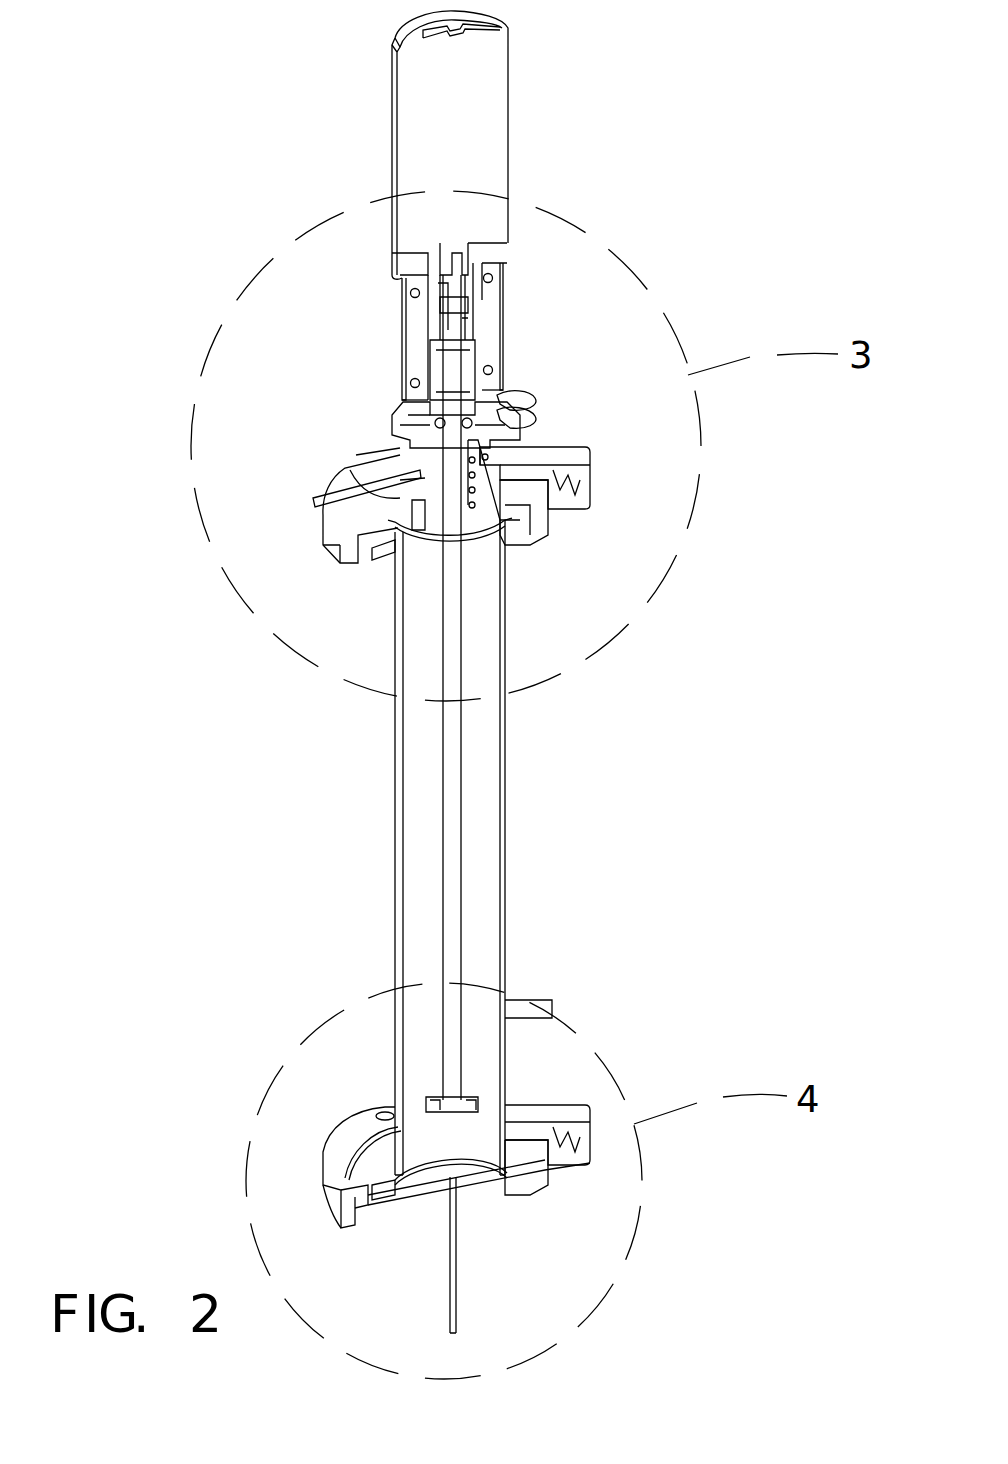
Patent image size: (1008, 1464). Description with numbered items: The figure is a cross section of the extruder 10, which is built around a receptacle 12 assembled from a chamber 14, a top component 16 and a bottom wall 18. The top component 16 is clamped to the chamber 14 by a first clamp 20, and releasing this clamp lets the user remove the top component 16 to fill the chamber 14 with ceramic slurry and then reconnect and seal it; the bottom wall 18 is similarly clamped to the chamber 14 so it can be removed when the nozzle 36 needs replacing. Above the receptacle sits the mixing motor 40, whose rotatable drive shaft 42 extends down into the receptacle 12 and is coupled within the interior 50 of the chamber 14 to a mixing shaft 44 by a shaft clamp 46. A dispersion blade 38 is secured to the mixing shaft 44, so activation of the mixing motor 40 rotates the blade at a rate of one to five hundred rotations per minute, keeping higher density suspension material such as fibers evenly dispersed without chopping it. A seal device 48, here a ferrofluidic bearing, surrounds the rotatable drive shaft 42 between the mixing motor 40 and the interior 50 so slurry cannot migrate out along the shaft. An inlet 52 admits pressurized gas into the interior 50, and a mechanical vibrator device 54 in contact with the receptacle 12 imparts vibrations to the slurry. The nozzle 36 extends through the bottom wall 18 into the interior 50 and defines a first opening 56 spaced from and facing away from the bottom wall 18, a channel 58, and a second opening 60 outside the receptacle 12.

The extruder 10 is at (642, 304).
The receptacle 12 is at (474, 740).
The chamber 14 is at (508, 817).
The top component 16 is at (498, 482).
The bottom wall 18 is at (480, 1172).
The first clamp 20 is at (327, 543).
The nozzle 36 is at (462, 1259).
The dispersion blade 38 is at (483, 1097).
The mixing motor 40 is at (487, 170).
The rotatable drive shaft 42 is at (455, 410).
The mixing shaft 44 is at (462, 912).
The shaft clamp 46 is at (425, 468).
The seal device 48 is at (468, 400).
The interior 50 is at (477, 551).
The inlet 52 is at (428, 520).
The mechanical vibrator device 54 is at (512, 1011).
The first opening 56 is at (445, 1165).
The channel 58 is at (448, 1255).
The second opening 60 is at (455, 1335).